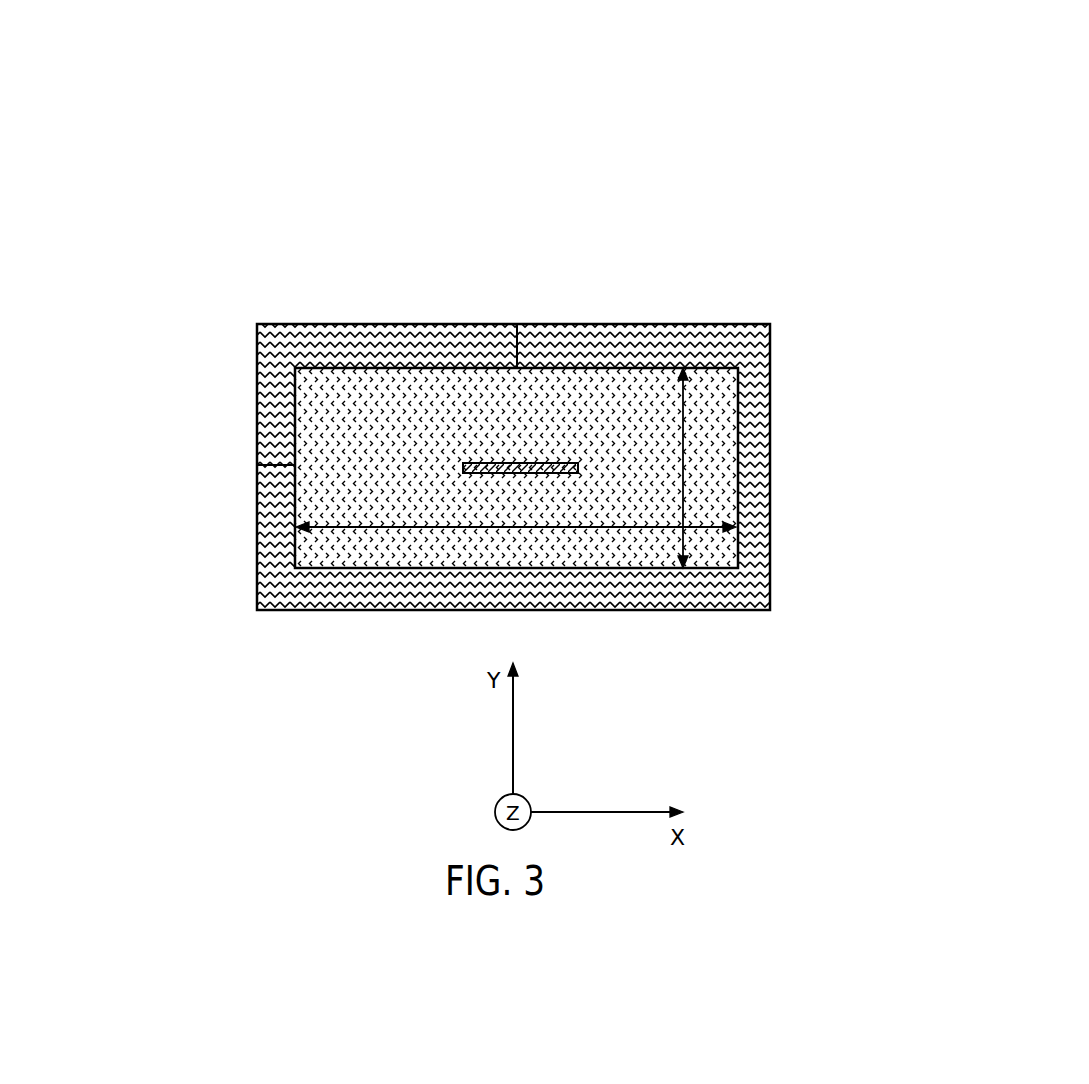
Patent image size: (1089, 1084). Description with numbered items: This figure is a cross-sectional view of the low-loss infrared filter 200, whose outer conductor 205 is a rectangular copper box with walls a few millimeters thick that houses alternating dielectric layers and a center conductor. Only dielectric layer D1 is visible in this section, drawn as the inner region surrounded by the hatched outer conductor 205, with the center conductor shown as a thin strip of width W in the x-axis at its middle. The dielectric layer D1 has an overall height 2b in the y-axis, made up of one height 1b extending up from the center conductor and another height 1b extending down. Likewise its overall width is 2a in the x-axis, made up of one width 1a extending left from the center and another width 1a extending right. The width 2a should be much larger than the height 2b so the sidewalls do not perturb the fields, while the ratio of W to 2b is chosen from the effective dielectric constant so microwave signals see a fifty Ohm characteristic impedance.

The low-loss infrared filter 200 is at (590, 378).
The outer conductor 205 is at (755, 600).
The width 1a is at (513, 325).
The height 1b is at (256, 373).
The width of dielectric layer 2a is at (582, 527).
The height of dielectric layer 2b is at (683, 443).
The dielectric layer D1 is at (377, 555).
The width of center conductor W is at (578, 438).